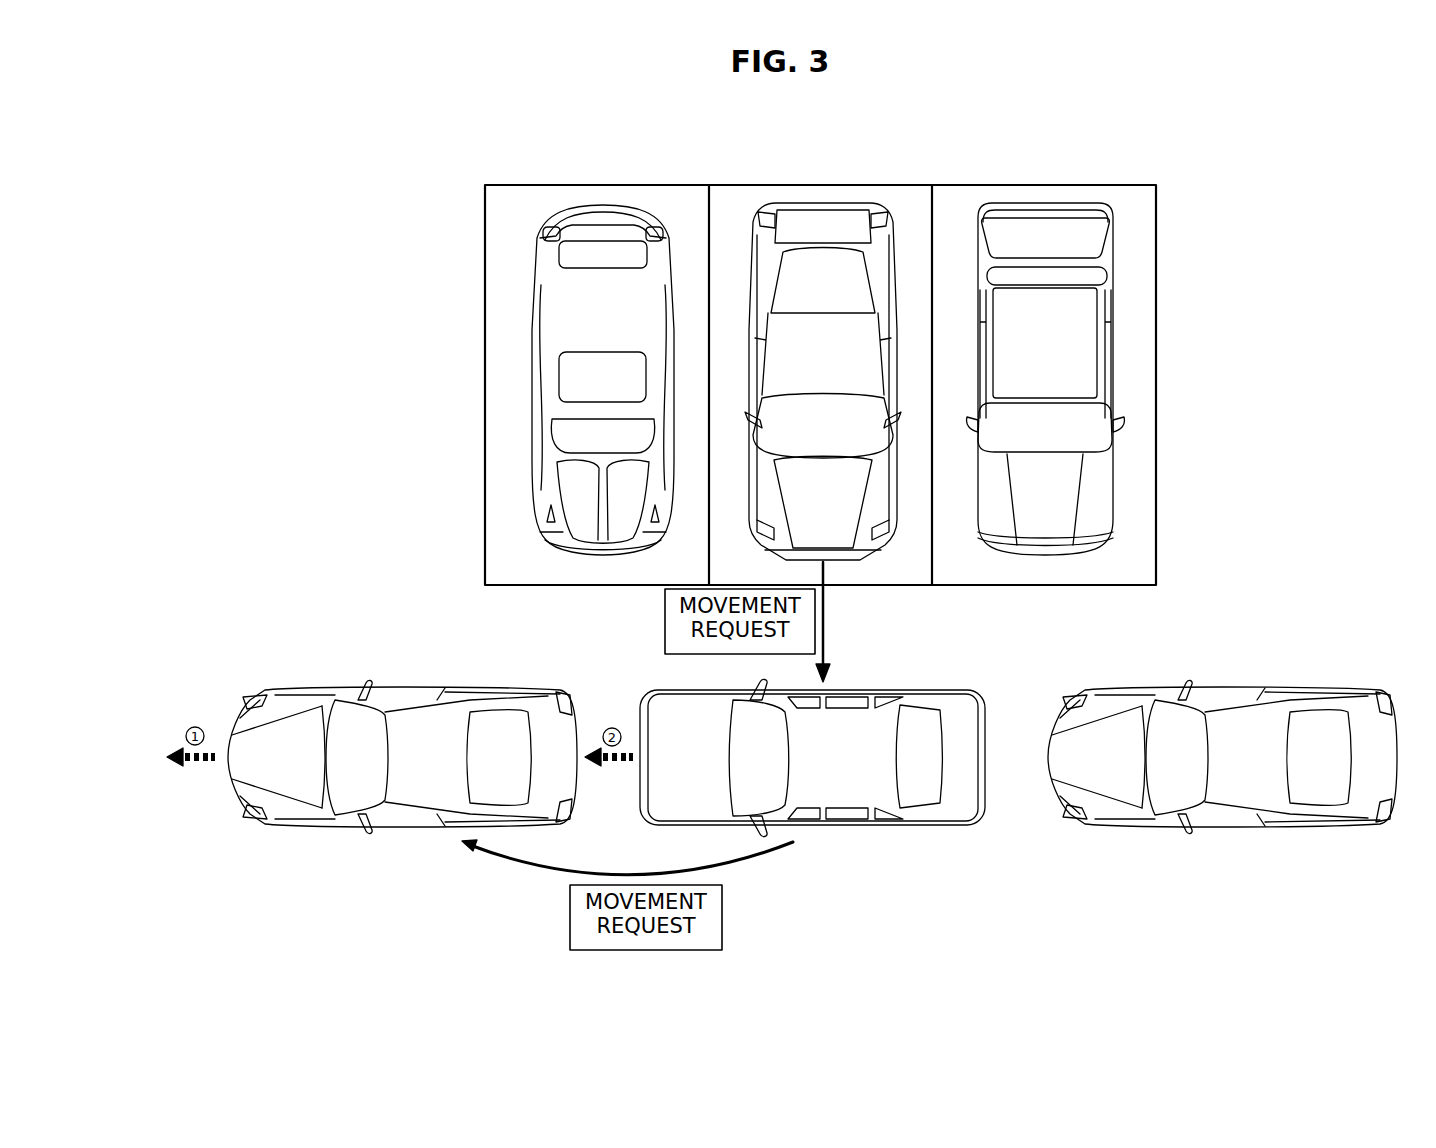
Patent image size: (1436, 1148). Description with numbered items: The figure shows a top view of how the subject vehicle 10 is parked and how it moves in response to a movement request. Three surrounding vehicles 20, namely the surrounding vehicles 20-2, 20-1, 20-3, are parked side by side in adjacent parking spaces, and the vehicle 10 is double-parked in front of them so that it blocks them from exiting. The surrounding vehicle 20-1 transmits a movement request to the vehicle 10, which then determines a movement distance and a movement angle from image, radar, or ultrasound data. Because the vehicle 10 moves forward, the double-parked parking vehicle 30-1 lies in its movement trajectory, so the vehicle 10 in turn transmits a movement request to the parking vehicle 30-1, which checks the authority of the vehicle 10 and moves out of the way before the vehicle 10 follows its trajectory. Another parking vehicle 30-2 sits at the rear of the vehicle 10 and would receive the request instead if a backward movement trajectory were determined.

The surrounding vehicle 20 is at (603, 141).
The surrounding vehicle 20-1 is at (826, 225).
The surrounding vehicle 20-2 is at (606, 232).
The surrounding vehicle 20-3 is at (1048, 228).
The vehicle 10 is at (843, 815).
The parking vehicle 30-1 is at (409, 815).
The parking vehicle 30-2 is at (1225, 815).